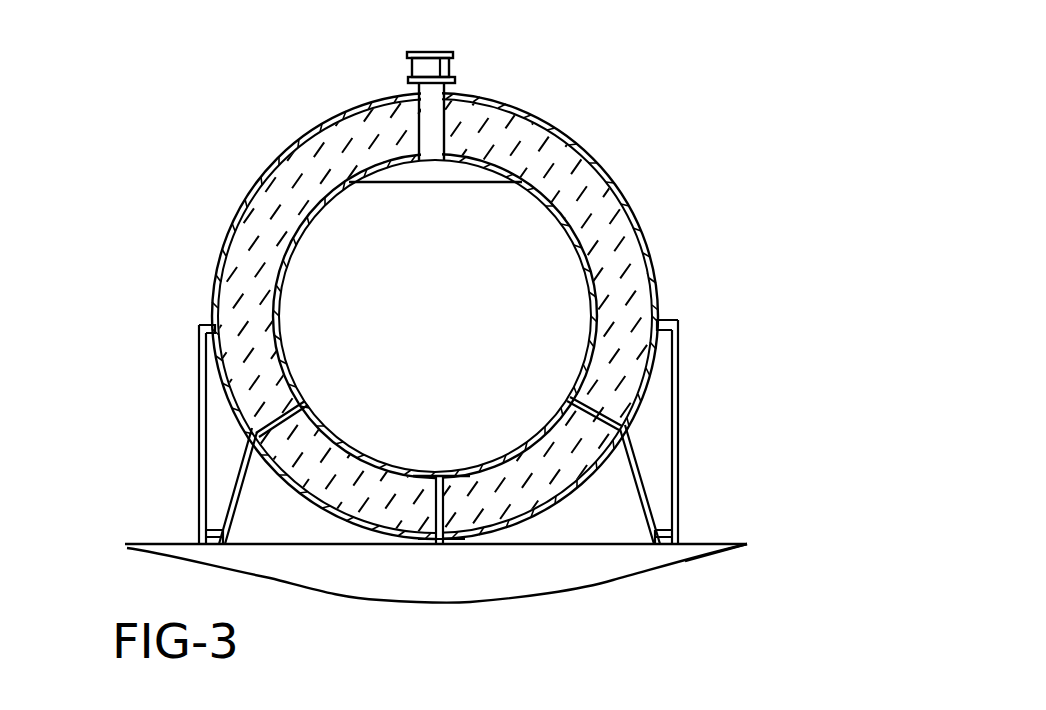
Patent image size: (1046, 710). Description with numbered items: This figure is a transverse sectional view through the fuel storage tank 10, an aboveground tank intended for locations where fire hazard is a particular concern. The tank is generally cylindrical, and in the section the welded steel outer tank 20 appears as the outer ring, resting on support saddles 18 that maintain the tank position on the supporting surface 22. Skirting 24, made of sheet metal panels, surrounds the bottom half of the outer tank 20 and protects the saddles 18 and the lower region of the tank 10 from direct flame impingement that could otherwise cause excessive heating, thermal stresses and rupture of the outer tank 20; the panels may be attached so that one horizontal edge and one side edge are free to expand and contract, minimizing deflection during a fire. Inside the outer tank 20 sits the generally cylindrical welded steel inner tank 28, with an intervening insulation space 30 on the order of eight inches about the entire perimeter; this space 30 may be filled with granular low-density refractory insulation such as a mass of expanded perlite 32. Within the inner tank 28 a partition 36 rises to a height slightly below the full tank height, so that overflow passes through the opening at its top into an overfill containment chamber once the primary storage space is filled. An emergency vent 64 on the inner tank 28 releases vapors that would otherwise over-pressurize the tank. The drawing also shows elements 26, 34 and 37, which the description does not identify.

The fuel storage tank 10 is at (327, 80).
The support saddles 18 is at (275, 522).
The outer tank 20 is at (266, 164).
The supporting surface 22 is at (167, 545).
The skirting 24 is at (194, 448).
The base foot 26 is at (205, 500).
The inner tank 28 is at (275, 271).
The insulation space 30 is at (232, 302).
The expanded perlite 32 is at (270, 362).
The support bracket 34 is at (272, 424).
The partition 36 is at (382, 272).
The baffle plate 37 is at (380, 182).
The emergency vent 64 is at (452, 56).